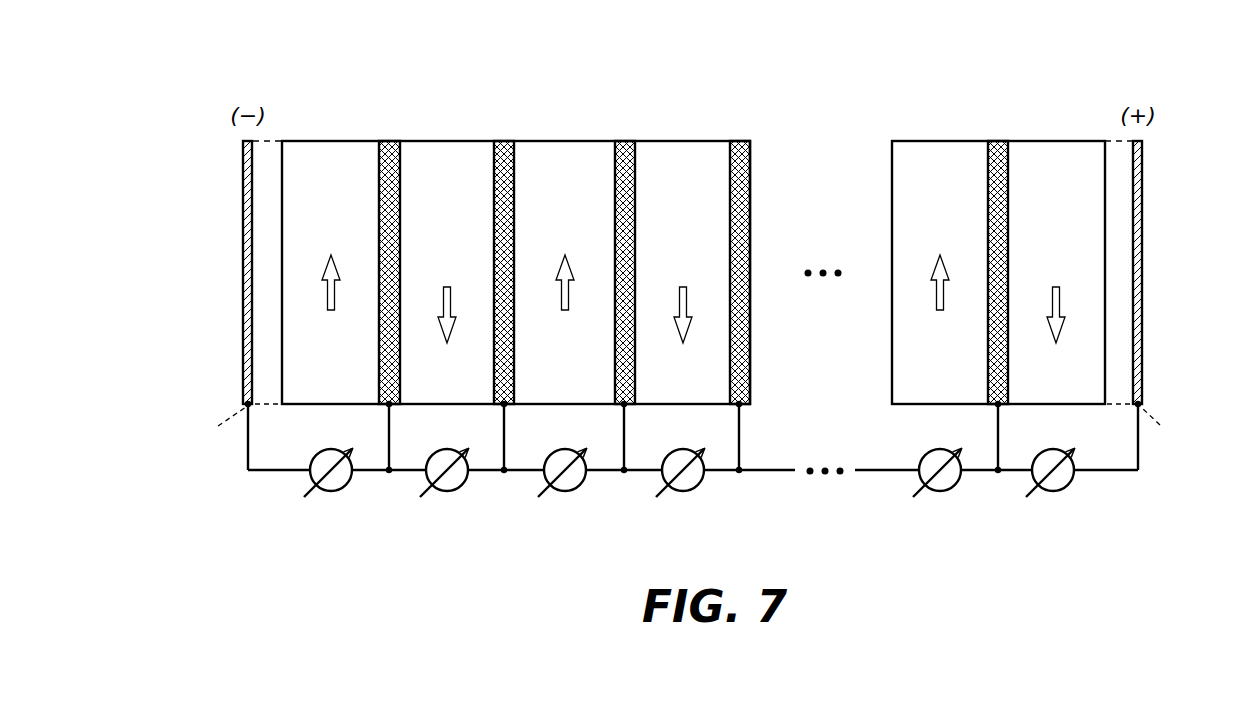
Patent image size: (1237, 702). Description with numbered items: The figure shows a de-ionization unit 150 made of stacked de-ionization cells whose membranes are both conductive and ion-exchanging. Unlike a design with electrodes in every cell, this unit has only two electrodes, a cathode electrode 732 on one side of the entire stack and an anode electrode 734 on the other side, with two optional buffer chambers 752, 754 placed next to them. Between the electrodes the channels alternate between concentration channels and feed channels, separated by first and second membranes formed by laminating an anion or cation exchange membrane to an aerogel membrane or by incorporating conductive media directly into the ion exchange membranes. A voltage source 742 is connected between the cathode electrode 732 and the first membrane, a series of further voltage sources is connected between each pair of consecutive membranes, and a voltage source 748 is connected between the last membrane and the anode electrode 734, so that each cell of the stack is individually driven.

The de-ionization unit 150 is at (1146, 50).
The cathode electrode 732 is at (243, 200).
The anode electrode 734 is at (1142, 200).
The voltage source 742 is at (340, 492).
The voltage source 748 is at (1062, 492).
The buffer chamber 752 is at (229, 420).
The buffer chamber 754 is at (1156, 420).